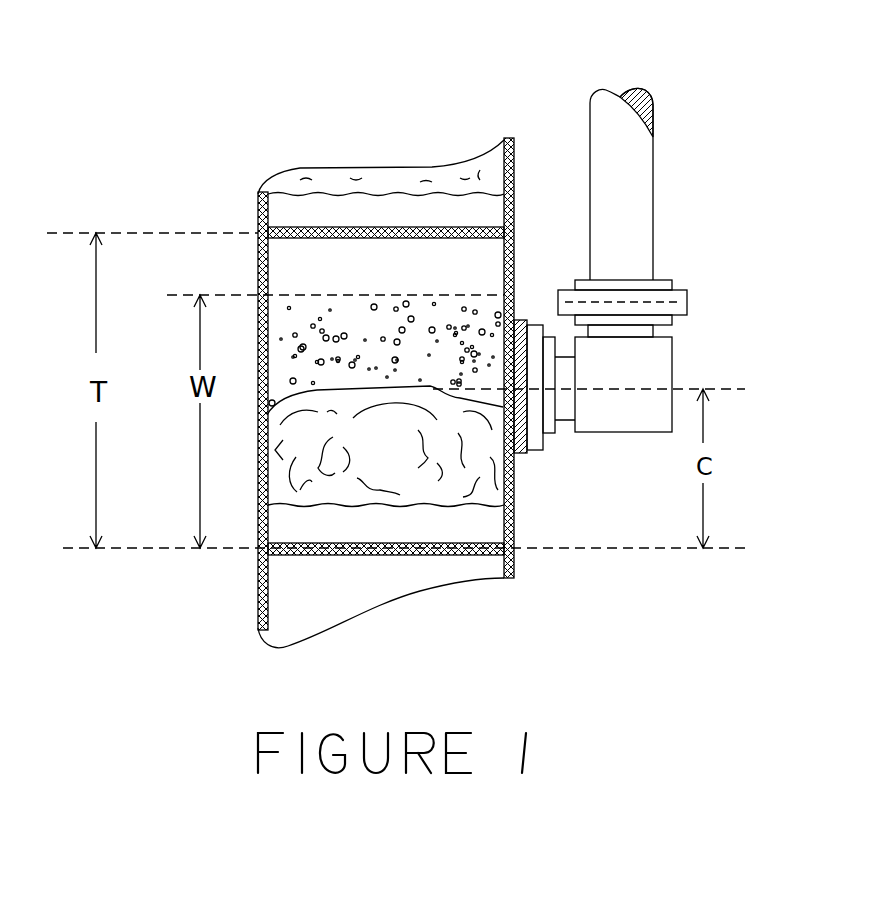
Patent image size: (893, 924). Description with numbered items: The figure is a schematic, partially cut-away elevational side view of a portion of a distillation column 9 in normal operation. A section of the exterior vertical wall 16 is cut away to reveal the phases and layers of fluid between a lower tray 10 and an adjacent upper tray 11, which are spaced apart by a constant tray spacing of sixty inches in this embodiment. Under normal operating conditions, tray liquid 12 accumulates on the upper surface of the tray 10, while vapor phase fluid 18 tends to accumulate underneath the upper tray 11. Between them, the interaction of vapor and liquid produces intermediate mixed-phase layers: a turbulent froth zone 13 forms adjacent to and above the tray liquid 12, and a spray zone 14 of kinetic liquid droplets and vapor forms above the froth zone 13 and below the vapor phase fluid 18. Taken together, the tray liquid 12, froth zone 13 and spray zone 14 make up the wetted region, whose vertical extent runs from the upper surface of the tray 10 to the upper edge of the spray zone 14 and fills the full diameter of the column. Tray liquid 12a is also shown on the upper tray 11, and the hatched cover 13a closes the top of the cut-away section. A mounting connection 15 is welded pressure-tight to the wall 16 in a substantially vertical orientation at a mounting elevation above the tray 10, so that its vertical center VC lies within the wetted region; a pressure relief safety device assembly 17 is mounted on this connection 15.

The distillation column 9 is at (241, 211).
The tray 10 is at (295, 555).
The tray 11 is at (328, 232).
The tray liquid 12 is at (386, 530).
The tray liquid 12a is at (392, 200).
The turbulent froth zone 13 is at (385, 446).
The top cover 13a is at (513, 153).
The spray zone 14 is at (385, 353).
The mounting connection 15 is at (517, 337).
The vertical wall 16 is at (515, 518).
The safety device assembly 17 is at (630, 370).
The vapor phase fluid 18 is at (407, 270).
The vertical center VC is at (530, 427).